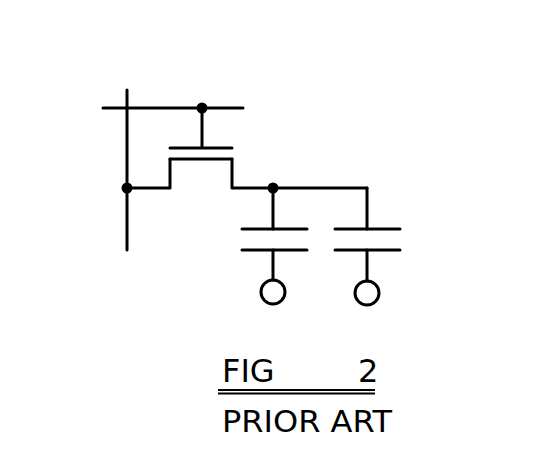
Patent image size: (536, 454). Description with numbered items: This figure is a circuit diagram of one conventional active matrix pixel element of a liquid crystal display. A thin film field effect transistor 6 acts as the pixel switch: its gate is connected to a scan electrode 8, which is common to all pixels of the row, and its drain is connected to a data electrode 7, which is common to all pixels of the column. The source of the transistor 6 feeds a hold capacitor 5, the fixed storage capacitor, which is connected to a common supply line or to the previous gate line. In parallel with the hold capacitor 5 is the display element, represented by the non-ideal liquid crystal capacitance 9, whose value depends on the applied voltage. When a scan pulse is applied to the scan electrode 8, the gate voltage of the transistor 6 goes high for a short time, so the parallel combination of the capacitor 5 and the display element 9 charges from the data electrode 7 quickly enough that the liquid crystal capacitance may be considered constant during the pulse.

The hold capacitor 5 is at (245, 240).
The thin film field effect transistor 6 is at (235, 155).
The data electrode 7 is at (125, 142).
The scan electrode 8 is at (172, 107).
The liquid crystal capacitance Clc 9 is at (393, 242).